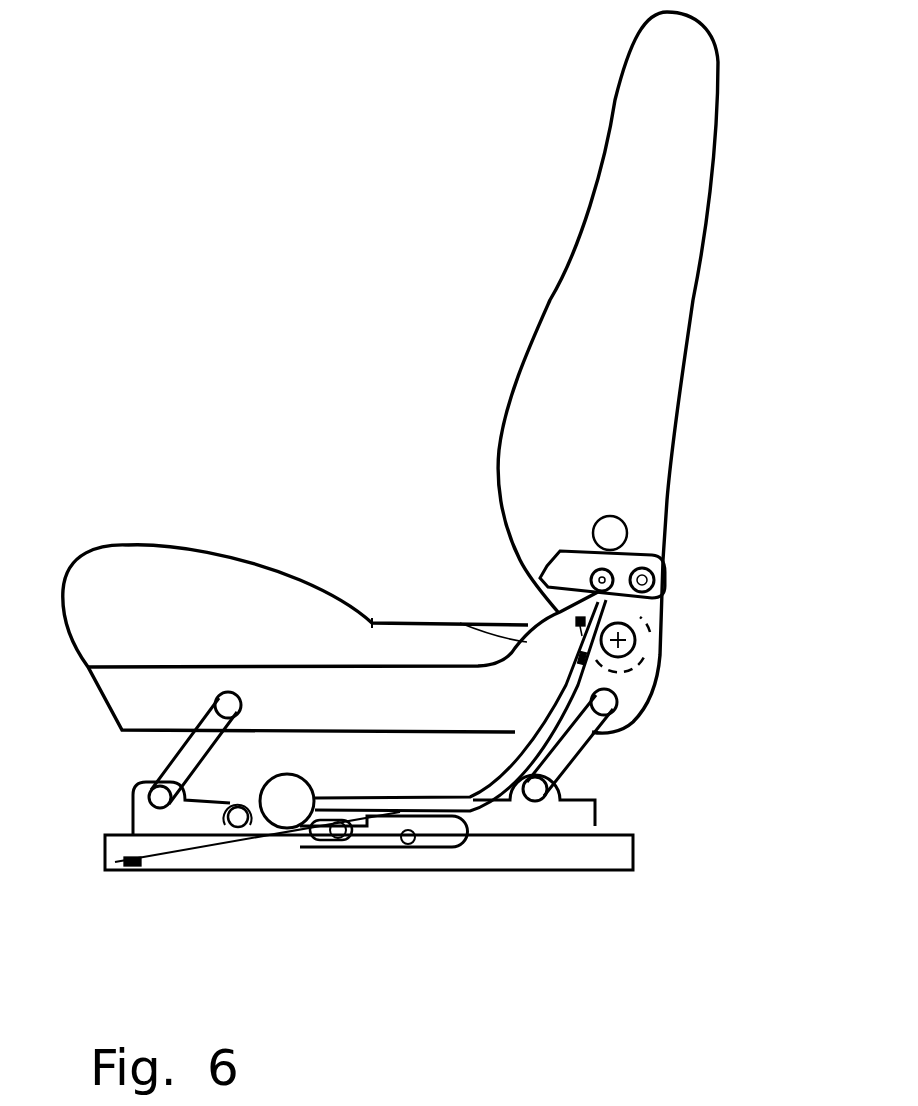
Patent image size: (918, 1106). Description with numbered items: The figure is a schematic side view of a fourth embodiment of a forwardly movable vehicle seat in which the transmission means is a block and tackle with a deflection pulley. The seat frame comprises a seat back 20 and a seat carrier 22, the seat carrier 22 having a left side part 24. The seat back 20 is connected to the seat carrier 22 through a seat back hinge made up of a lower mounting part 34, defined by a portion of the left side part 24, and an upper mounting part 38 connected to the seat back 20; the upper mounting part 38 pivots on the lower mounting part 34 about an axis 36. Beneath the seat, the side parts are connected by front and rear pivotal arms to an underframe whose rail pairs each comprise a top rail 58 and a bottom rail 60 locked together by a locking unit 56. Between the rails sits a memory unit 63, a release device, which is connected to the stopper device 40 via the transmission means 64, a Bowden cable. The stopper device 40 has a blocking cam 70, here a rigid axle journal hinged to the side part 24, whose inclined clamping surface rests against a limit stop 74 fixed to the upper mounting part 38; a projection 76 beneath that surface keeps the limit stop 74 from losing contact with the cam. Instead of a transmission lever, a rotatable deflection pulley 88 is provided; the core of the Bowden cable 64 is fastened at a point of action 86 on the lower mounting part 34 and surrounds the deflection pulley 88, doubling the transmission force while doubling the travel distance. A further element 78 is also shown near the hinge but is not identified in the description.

The seat back 20 is at (643, 158).
The seat carrier 22 is at (133, 526).
The left side part 24 is at (265, 693).
The lower mounting part 34 is at (637, 677).
The axis 36 is at (635, 628).
The upper mounting part 38 is at (547, 503).
The stopper device 40 is at (533, 547).
The locking unit 56 is at (262, 840).
The top rail 58 is at (577, 815).
The bottom rail 60 is at (478, 850).
The memory unit 63 is at (288, 803).
The transmission means 64 is at (530, 747).
The blocking cam 70 is at (655, 558).
The limit stop 74 is at (607, 528).
The projection 76 is at (535, 581).
The pin 78 is at (658, 556).
The point of action 86 is at (460, 622).
The deflection pulley 88 is at (600, 518).